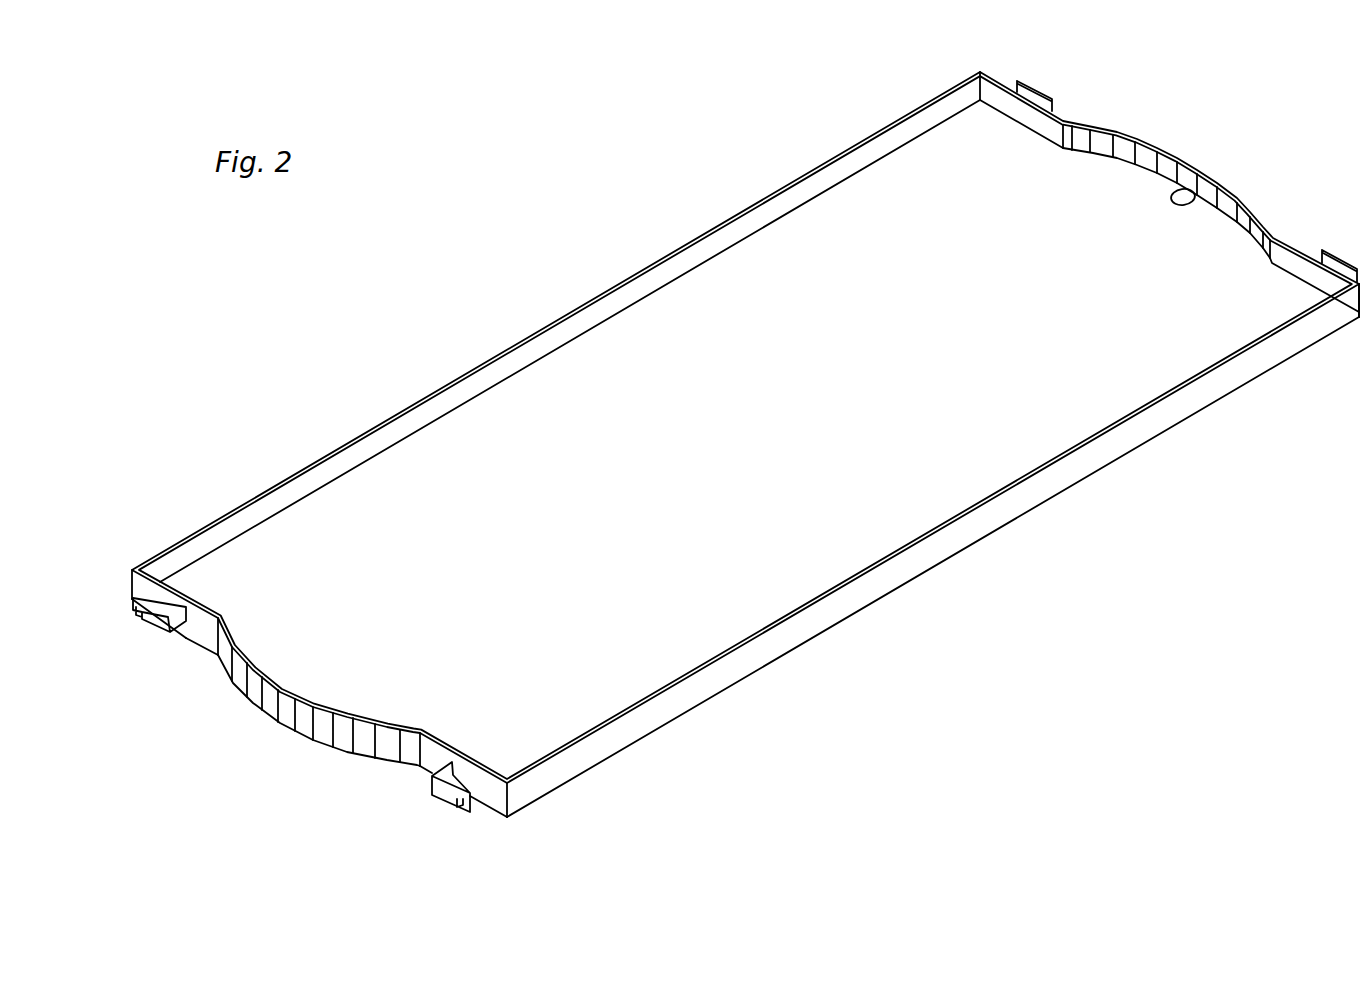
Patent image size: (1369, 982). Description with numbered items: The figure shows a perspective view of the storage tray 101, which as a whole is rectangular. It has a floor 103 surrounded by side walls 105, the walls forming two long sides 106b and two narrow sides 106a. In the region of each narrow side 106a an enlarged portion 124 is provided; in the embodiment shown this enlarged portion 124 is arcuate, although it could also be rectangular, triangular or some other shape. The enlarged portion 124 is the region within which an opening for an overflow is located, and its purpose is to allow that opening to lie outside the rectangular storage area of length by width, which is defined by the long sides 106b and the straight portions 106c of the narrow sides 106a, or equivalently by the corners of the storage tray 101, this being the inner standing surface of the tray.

The storage tray 101 is at (668, 186).
The floor 103 is at (701, 473).
The side walls 105 is at (505, 349).
The narrow sides 106a is at (1115, 86).
The long sides 106b is at (980, 558).
The straight portions 106c is at (485, 826).
The enlarged portion 124 is at (1177, 137).